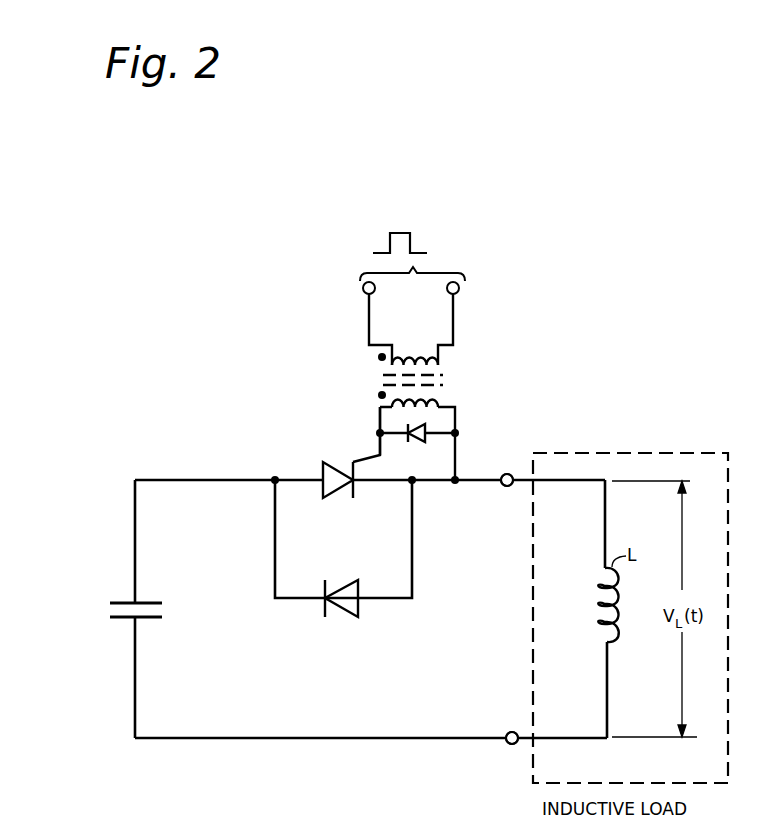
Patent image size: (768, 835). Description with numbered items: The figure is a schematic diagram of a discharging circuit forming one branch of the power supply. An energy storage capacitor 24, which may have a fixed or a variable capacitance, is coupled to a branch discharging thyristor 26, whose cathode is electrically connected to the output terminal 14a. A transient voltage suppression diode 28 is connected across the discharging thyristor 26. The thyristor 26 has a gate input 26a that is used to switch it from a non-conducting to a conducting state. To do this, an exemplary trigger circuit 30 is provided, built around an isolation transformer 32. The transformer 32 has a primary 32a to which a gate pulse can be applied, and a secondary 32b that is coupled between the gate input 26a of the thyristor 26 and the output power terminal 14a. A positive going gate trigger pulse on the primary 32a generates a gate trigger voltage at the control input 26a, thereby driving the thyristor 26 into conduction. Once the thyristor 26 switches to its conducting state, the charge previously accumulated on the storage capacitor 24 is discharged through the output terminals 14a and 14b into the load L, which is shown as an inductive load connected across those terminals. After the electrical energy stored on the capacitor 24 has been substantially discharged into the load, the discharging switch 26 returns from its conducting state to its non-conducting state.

The output terminal 14a is at (480, 477).
The output terminal 14b is at (403, 737).
The energy storage capacitor 24 is at (128, 618).
The branch discharging thyristor 26 is at (328, 472).
The gate input 26a is at (366, 456).
The transient voltage suppression diode 28 is at (347, 603).
The trigger circuit 30 is at (432, 356).
The isolation transformer 32 is at (400, 350).
The primary 32a is at (417, 268).
The secondary 32b is at (381, 423).